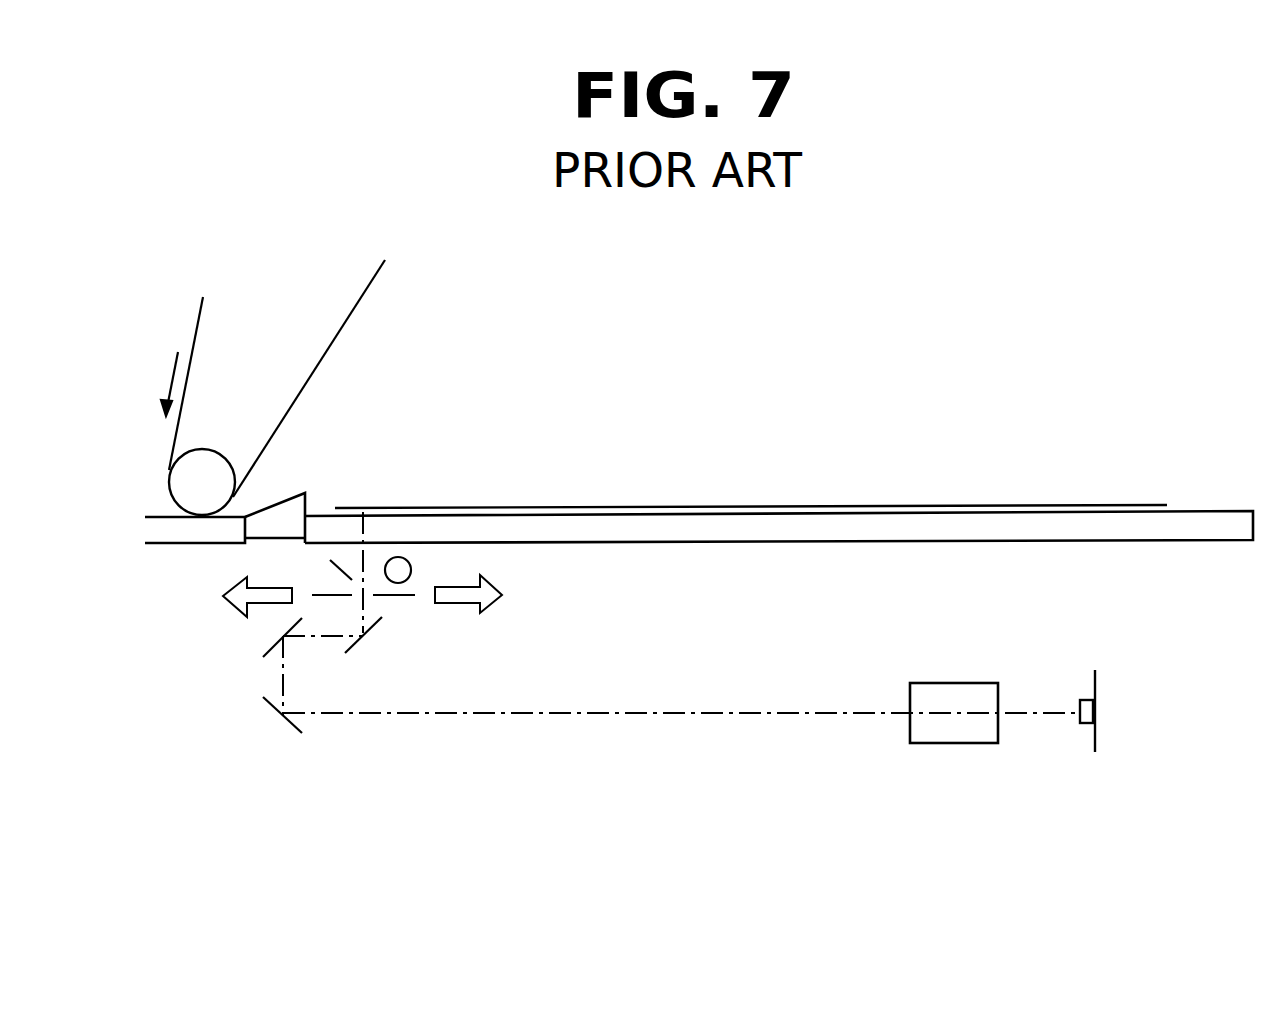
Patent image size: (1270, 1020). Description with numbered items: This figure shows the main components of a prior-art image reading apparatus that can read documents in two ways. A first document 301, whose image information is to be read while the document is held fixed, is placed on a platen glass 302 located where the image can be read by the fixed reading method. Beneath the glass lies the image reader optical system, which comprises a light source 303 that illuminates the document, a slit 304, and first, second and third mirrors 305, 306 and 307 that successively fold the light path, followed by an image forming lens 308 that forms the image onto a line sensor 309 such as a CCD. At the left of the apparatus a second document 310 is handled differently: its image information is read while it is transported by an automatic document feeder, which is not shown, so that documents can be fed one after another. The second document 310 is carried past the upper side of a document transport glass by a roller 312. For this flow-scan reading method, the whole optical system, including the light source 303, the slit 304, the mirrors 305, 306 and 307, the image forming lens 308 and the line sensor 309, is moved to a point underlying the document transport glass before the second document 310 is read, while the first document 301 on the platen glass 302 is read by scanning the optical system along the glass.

The first document 301 is at (1112, 505).
The platen glass 302 is at (1208, 518).
The light source 303 is at (413, 563).
The slit 304 is at (395, 597).
The first mirror 305 is at (360, 643).
The second mirror 306 is at (262, 642).
The third mirror 307 is at (262, 703).
The image forming lens 308 is at (945, 690).
The line sensor 309 is at (1087, 722).
The second document 310 is at (200, 325).
The roller 312 is at (180, 495).